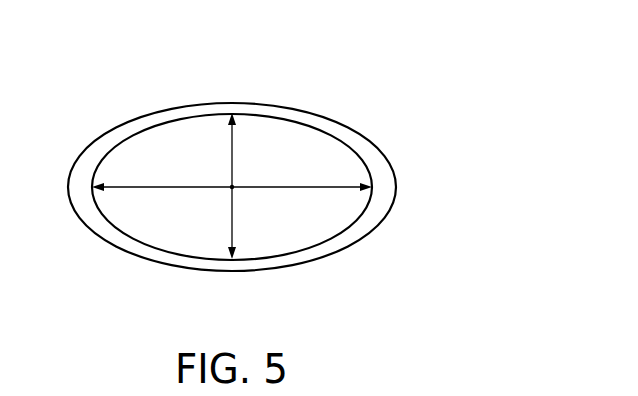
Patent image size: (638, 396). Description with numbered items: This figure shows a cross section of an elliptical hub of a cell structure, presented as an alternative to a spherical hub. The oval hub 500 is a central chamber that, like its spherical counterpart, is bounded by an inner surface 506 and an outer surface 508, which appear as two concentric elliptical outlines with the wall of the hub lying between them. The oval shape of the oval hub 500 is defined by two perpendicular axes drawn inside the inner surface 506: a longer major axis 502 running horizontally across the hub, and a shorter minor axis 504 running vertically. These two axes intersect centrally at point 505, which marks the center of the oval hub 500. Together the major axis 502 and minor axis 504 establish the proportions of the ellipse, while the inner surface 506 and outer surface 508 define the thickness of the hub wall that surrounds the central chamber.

The oval hub 500 is at (272, 179).
The major axis 502 is at (177, 191).
The minor axis 504 is at (233, 233).
The central intersection point 505 is at (233, 187).
The inner surface 506 is at (344, 220).
The outer surface 508 is at (282, 270).